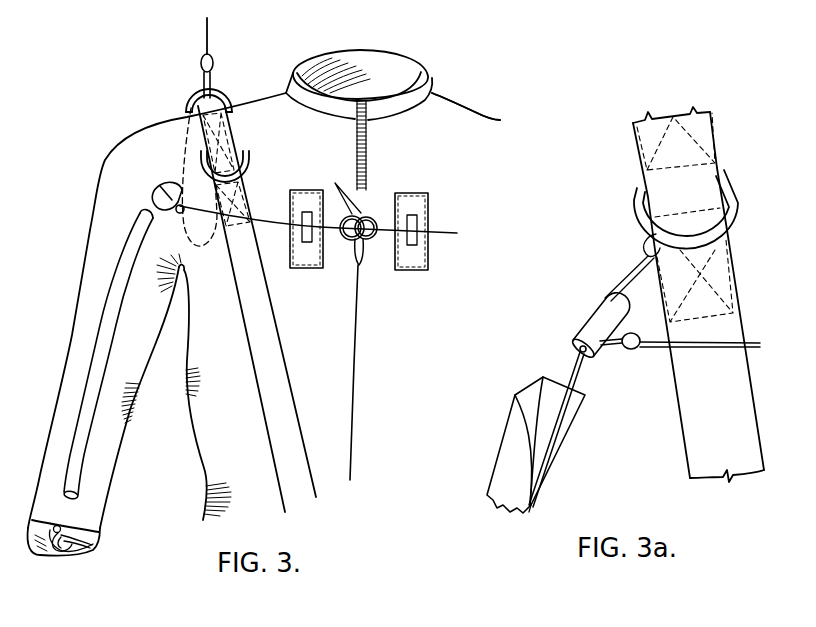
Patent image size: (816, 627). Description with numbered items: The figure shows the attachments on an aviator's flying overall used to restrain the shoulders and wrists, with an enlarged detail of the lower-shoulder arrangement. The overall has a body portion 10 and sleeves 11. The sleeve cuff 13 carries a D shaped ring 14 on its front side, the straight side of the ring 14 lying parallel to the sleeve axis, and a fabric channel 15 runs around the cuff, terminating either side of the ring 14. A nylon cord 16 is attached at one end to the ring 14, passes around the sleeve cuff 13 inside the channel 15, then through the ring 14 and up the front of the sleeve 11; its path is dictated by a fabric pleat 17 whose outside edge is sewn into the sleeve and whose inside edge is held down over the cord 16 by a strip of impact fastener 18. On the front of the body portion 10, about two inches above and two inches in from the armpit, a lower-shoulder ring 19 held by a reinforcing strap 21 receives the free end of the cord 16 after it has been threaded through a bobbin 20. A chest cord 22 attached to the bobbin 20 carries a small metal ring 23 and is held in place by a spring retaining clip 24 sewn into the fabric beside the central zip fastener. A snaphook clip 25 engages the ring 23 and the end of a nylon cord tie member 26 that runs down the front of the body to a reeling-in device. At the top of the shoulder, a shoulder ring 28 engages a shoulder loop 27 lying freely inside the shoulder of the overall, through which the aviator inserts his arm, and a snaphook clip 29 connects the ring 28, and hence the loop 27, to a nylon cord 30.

In FIG. 3, the body portion 10 is at (486, 113).
In FIG. 3, the sleeve 11 is at (85, 248).
In FIG. 3, the sleeve cuff 13 is at (58, 552).
In FIG. 3, the ring 14 is at (55, 548).
In FIG. 3, the fabric channel 15 is at (90, 547).
In FIG. 3, the nylon cord 16 is at (84, 517).
In FIG. 3A, the nylon cord 16 is at (570, 367).
In FIG. 3, the fabric pleat 17 is at (98, 328).
In FIG. 3A, the fabric pleat 17 is at (513, 498).
In FIG. 3A, the impact fastener 18 is at (525, 423).
In FIG. 3, the lower-shoulder ring 19 is at (249, 170).
In FIG. 3A, the lower-shoulder ring 19 is at (735, 217).
In FIG. 3, the bobbin 20 is at (160, 195).
In FIG. 3A, the bobbin 20 is at (583, 317).
In FIG. 3, the reinforcing strap 21 is at (236, 137).
In FIG. 3A, the reinforcing strap 21 is at (717, 147).
In FIG. 3, the chest cord 22 is at (267, 222).
In FIG. 3, the small metal ring 23 is at (335, 184).
In FIG. 3, the spring retaining clip 24 is at (307, 242).
In FIG. 3, the snaphook clip 25 is at (362, 256).
In FIG. 3, the nylon cord tie member 26 is at (357, 348).
In FIG. 3, the shoulder loop 27 is at (183, 160).
In FIG. 3, the shoulder ring 28 is at (188, 97).
In FIG. 3, the snaphook clip 29 is at (212, 80).
In FIG. 3, the nylon cord 30 is at (209, 40).